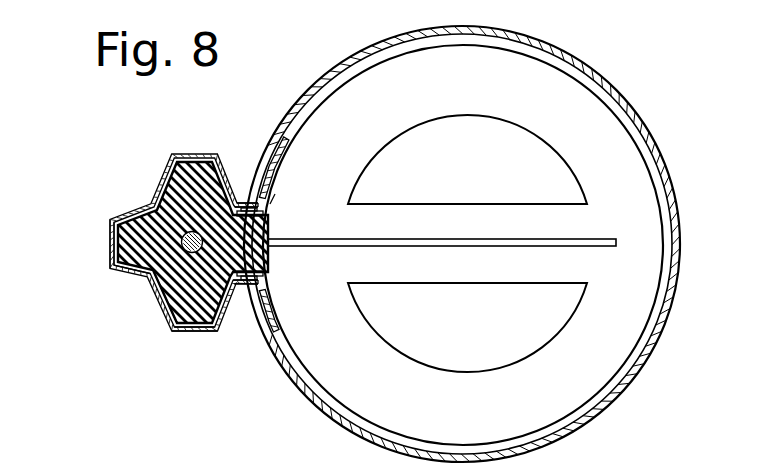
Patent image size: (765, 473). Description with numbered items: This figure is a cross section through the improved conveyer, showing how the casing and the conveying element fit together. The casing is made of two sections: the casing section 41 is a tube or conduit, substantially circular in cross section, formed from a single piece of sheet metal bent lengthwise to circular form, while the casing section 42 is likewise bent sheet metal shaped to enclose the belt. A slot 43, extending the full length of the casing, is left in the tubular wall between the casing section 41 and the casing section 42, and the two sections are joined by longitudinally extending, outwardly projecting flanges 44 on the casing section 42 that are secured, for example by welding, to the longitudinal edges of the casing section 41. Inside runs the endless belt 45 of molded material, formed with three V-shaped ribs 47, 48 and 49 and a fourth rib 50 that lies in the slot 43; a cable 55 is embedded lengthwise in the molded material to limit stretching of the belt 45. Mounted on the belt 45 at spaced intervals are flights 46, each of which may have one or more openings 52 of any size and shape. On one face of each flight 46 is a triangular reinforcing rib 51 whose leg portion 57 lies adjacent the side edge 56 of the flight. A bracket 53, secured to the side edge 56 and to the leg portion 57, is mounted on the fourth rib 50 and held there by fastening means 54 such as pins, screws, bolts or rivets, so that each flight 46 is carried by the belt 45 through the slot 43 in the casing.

The casing section 41 is at (657, 146).
The casing section 42 is at (128, 206).
The slot 43 is at (243, 196).
The flanges 44 is at (262, 186).
The endless belt 45 is at (168, 278).
The flight 46 is at (463, 245).
The V-shaped rib 47 is at (178, 158).
The V-shaped rib 48 is at (108, 232).
The V-shaped rib 49 is at (170, 330).
The fourth rib 50 is at (270, 219).
The reinforcing rib 51 is at (578, 240).
The opening 52 is at (475, 116).
The bracket 53 is at (271, 273).
The fastening means 54 is at (242, 297).
The cable 55 is at (150, 272).
The side edge 56 is at (275, 194).
The leg portion 57 is at (271, 251).